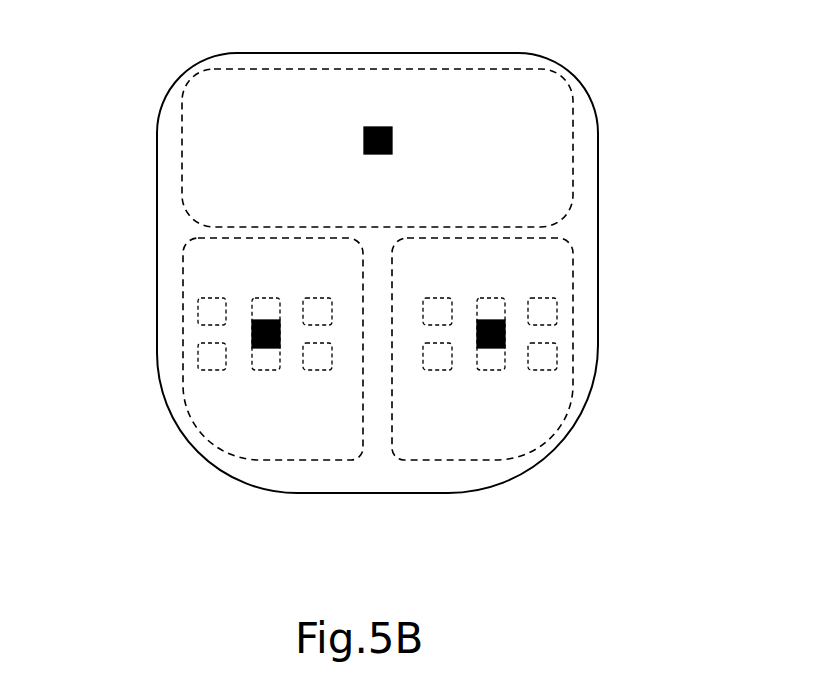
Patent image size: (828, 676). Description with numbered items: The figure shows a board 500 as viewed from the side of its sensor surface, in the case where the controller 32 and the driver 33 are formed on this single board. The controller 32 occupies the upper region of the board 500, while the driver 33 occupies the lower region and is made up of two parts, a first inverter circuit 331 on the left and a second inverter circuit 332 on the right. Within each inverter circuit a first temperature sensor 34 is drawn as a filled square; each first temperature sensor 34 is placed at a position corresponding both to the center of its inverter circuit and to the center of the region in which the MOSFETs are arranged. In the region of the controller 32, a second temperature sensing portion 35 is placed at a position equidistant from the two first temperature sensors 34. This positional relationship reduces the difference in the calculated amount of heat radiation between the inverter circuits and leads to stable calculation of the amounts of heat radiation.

The board 500 is at (572, 80).
The controller 32 is at (573, 146).
The second temperature sensing portion 35 is at (363, 137).
The driver 33 is at (378, 425).
The first inverter circuit 331 is at (325, 460).
The second inverter circuit 332 is at (428, 460).
The first temperature sensor 34 is at (252, 333).